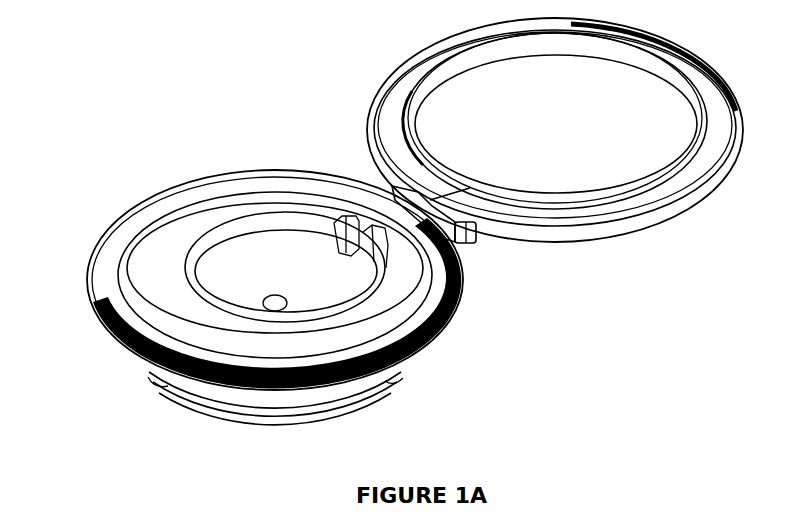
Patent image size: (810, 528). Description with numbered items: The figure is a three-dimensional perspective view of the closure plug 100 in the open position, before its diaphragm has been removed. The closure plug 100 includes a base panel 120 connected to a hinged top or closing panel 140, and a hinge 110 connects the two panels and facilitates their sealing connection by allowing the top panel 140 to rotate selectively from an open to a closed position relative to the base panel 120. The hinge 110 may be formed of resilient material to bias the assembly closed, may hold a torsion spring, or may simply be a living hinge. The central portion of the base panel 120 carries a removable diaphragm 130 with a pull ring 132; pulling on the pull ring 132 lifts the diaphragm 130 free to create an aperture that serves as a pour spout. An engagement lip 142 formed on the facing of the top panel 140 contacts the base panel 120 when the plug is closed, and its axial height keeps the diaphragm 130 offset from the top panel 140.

The closure plug 100 is at (178, 125).
The hinge 110 is at (400, 196).
The base panel 120 is at (412, 315).
The removable diaphragm 130 is at (180, 315).
The pull ring 132 is at (197, 293).
The top panel 140 is at (628, 162).
The engagement lip 142 is at (422, 80).